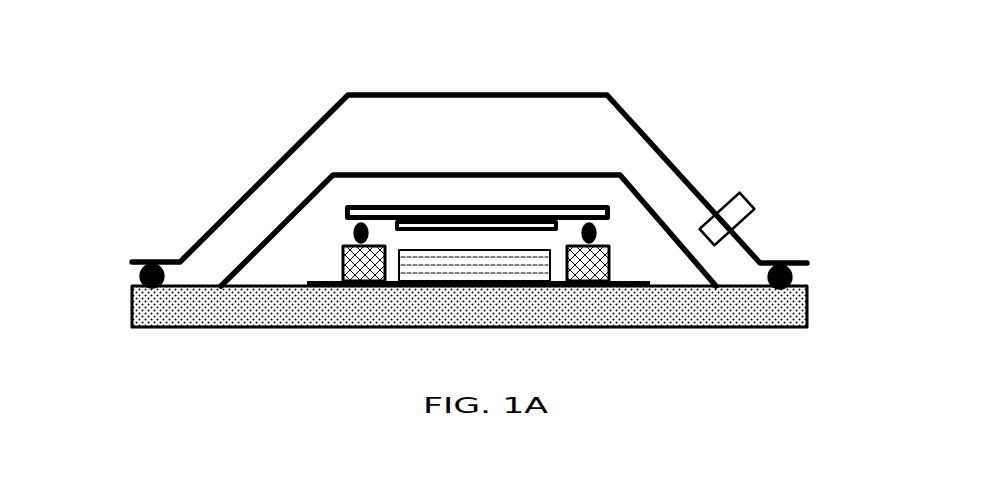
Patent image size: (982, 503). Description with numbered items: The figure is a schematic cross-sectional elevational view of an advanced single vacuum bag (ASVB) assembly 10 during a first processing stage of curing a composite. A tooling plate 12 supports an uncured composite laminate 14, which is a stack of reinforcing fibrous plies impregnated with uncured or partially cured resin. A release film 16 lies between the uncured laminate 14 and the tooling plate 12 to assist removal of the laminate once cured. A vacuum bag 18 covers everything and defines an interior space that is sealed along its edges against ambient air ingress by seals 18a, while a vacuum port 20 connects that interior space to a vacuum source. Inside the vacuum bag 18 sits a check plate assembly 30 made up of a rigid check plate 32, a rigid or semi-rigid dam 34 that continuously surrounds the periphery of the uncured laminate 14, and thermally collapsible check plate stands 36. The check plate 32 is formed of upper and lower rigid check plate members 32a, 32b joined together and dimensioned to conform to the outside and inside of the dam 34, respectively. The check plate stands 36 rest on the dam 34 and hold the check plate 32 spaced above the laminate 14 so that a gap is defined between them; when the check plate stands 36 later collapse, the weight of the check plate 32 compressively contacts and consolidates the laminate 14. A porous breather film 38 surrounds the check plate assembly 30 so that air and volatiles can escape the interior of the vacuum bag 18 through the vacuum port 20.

The advanced single vacuum bag assembly 10 is at (223, 58).
The tooling plate 12 is at (264, 317).
The uncured composite laminate 14 is at (506, 266).
The release film 16 is at (637, 285).
The vacuum bag 18 is at (340, 106).
The seals 18a is at (140, 271).
The vacuum port 20 is at (745, 210).
The check plate assembly 30 is at (466, 247).
The check plate 32 is at (466, 247).
The upper rigid check plate member 32a is at (510, 210).
The lower rigid check plate member 32b is at (418, 232).
The dam 34 is at (343, 262).
The check plate stand 36 is at (355, 233).
The porous breather film 38 is at (637, 190).